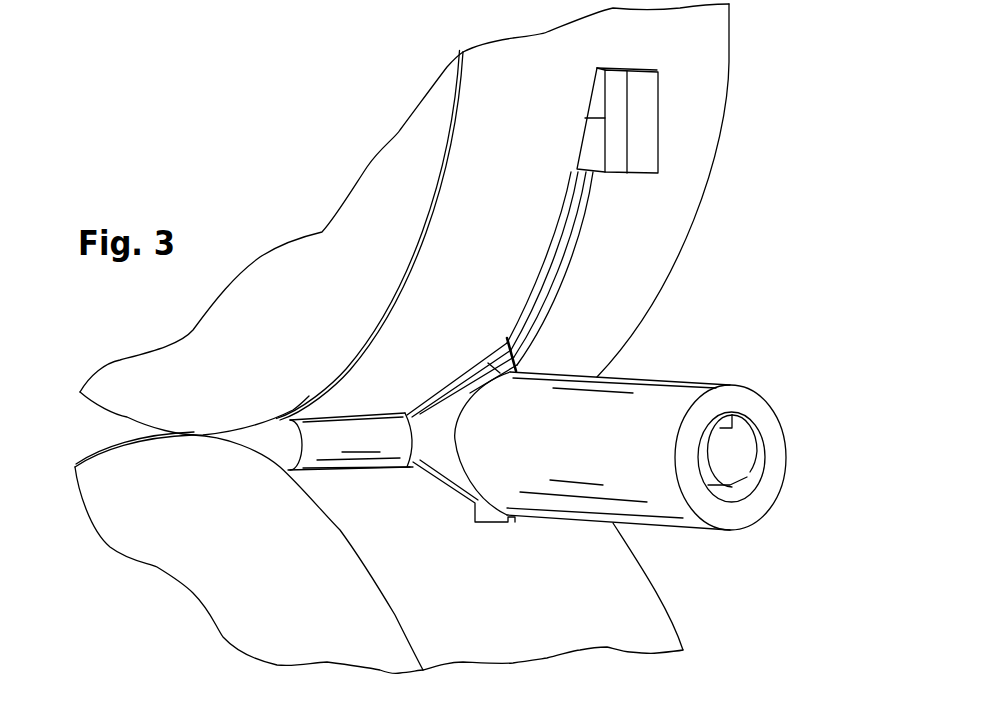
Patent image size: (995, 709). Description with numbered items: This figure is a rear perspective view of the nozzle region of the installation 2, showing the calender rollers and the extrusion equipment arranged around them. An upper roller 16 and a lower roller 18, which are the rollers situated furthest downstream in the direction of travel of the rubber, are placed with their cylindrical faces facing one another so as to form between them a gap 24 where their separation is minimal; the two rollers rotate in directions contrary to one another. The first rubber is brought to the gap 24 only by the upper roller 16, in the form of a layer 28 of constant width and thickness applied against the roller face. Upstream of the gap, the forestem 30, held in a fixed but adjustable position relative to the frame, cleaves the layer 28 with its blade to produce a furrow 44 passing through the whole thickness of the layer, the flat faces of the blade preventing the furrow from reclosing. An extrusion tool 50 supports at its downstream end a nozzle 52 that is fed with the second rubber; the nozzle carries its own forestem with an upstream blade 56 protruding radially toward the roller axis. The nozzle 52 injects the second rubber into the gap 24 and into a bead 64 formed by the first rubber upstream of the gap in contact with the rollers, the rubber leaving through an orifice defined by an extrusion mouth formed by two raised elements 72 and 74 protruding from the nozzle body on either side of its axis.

The installation 2 is at (770, 23).
The upper roller 16 is at (403, 168).
The lower roller 18 is at (270, 613).
The gap 24 is at (115, 430).
The layer 28 is at (687, 43).
The forestem 30 is at (645, 128).
The furrow 44 is at (587, 231).
The extrusion tool 50 is at (648, 410).
The nozzle 52 is at (435, 432).
The upstream blade 56 is at (503, 362).
The bead 64 is at (330, 450).
The raised element 72 is at (482, 378).
The raised element 74 is at (468, 503).